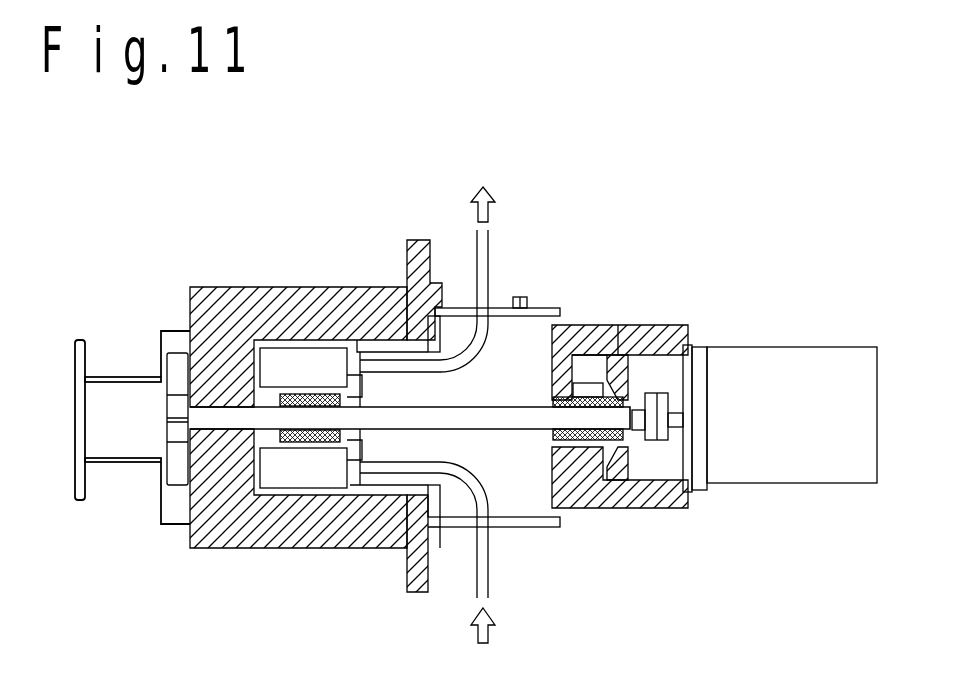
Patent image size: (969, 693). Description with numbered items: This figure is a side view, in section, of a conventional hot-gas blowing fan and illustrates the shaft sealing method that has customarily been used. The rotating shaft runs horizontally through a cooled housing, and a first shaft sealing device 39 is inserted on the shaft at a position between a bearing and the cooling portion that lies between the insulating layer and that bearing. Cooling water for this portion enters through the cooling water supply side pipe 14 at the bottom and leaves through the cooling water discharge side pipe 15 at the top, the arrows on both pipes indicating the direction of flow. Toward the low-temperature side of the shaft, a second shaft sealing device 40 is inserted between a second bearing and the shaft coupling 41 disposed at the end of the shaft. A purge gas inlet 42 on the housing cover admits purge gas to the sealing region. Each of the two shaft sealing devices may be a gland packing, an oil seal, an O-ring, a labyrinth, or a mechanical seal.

The cooling water supply side pipe 14 is at (492, 548).
The cooling water discharge side pipe 15 is at (490, 263).
The first shaft sealing device 39 is at (300, 405).
The second shaft sealing device 40 is at (612, 370).
The shaft coupling 41 is at (667, 390).
The purge gas inlet 42 is at (523, 293).